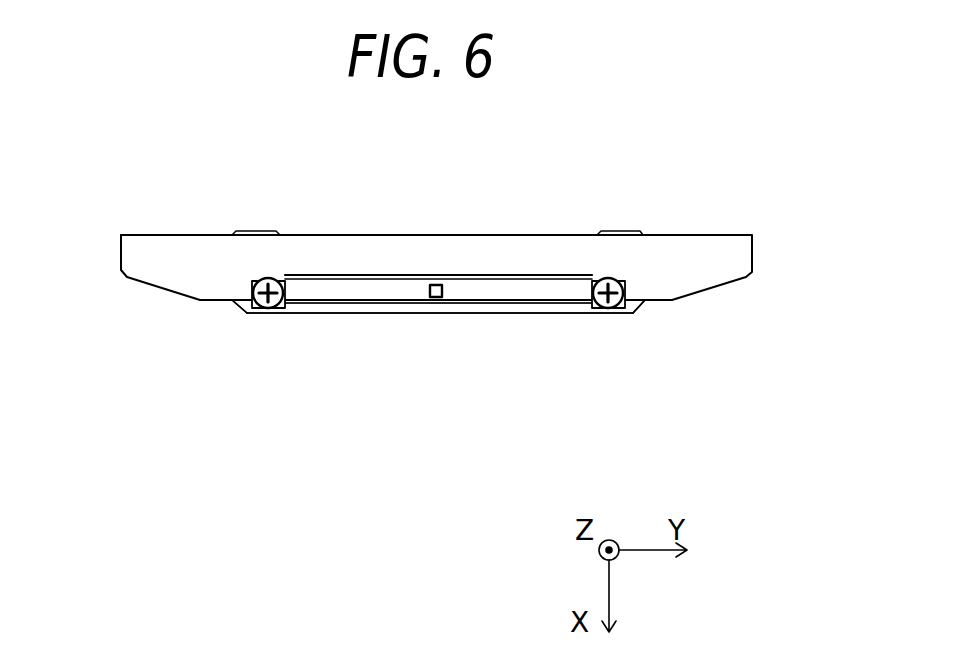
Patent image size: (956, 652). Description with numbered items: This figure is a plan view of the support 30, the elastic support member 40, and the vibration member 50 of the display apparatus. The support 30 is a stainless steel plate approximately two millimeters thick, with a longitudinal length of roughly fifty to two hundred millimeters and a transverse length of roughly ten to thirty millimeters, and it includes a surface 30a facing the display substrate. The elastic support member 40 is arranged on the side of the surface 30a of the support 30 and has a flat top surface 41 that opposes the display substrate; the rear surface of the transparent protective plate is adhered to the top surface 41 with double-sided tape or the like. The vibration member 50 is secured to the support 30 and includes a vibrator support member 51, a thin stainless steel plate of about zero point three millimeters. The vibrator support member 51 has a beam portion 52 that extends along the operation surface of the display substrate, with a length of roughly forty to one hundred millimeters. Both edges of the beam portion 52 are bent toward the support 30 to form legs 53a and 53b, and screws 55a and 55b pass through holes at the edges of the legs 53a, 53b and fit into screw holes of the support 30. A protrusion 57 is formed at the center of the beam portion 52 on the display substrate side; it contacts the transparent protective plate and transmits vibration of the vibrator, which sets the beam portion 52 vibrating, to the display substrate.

The elastic support member 40 is at (700, 235).
The top surface 41 is at (155, 243).
The support 30 is at (401, 318).
The surface 30a is at (343, 310).
The vibration member 50 is at (532, 305).
The vibrator support member 51 is at (490, 303).
The beam portion 52 is at (573, 298).
The leg 53a is at (248, 315).
The leg 53b is at (632, 313).
The screw 55a is at (273, 277).
The screw 55b is at (598, 277).
The protrusion 57 is at (437, 298).